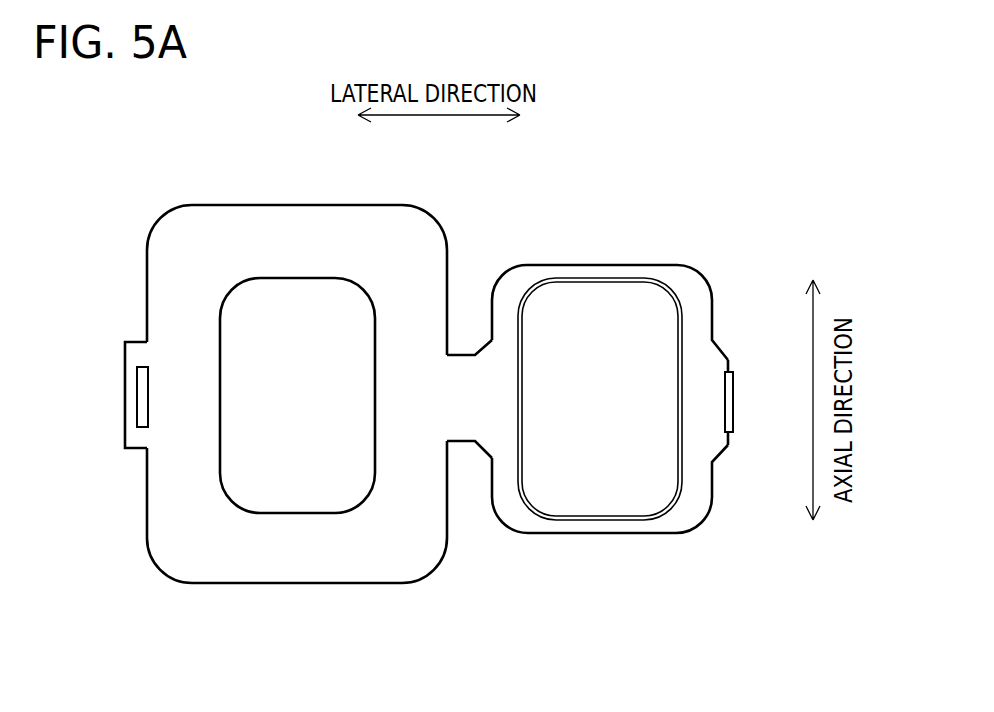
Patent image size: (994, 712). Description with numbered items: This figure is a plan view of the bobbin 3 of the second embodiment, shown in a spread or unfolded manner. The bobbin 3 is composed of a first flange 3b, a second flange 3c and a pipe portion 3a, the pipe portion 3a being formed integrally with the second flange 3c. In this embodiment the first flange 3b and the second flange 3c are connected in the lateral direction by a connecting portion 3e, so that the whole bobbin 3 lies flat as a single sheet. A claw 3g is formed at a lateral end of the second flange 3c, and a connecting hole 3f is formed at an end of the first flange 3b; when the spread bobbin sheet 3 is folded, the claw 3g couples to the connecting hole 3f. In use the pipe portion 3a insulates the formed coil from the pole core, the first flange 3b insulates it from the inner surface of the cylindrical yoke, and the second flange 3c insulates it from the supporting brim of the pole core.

The bobbin 3 is at (517, 200).
The pipe portion 3a is at (611, 283).
The first flange 3b is at (281, 232).
The second flange 3c is at (695, 305).
The connecting portion 3e is at (458, 378).
The connecting hole 3f is at (141, 405).
The claw 3g is at (730, 398).